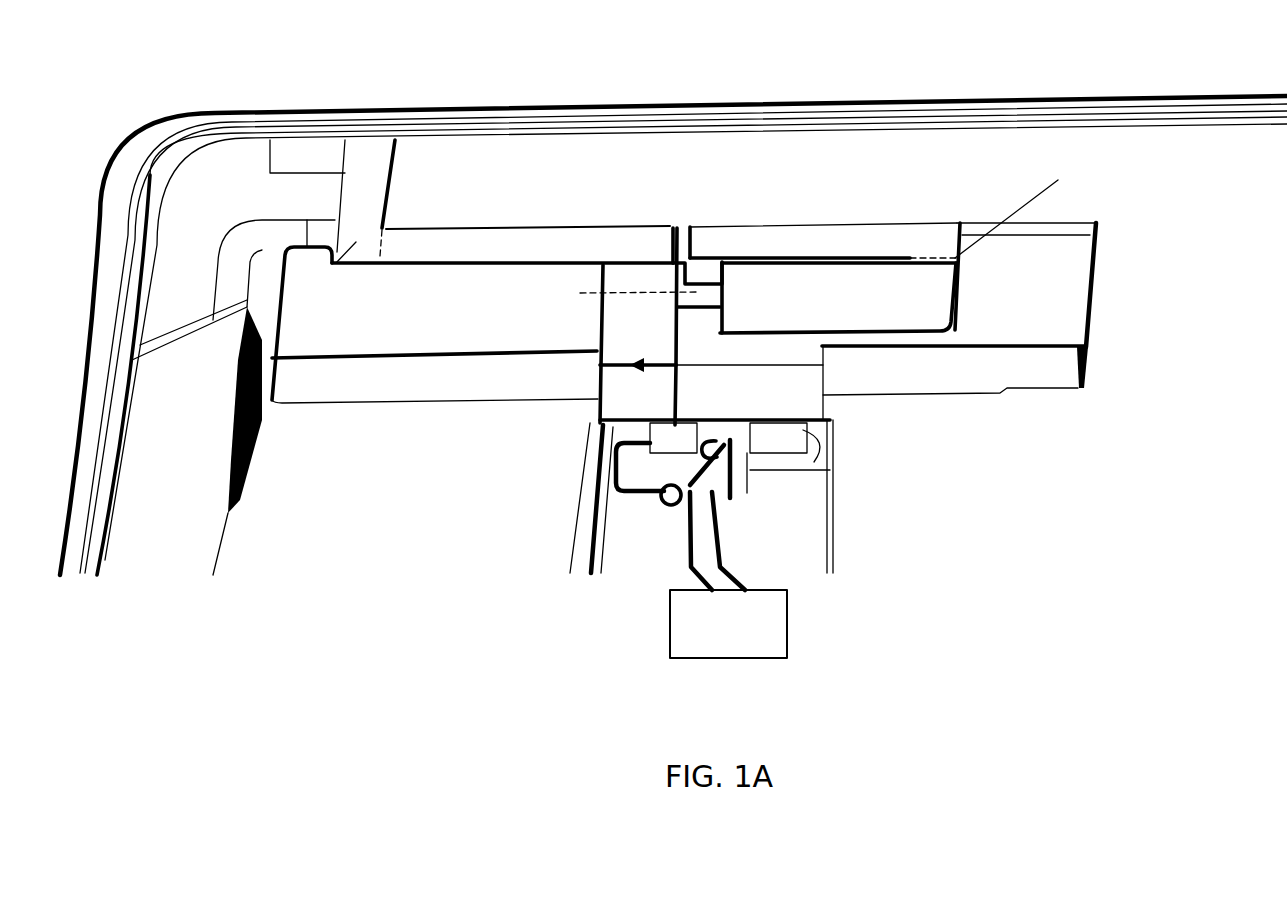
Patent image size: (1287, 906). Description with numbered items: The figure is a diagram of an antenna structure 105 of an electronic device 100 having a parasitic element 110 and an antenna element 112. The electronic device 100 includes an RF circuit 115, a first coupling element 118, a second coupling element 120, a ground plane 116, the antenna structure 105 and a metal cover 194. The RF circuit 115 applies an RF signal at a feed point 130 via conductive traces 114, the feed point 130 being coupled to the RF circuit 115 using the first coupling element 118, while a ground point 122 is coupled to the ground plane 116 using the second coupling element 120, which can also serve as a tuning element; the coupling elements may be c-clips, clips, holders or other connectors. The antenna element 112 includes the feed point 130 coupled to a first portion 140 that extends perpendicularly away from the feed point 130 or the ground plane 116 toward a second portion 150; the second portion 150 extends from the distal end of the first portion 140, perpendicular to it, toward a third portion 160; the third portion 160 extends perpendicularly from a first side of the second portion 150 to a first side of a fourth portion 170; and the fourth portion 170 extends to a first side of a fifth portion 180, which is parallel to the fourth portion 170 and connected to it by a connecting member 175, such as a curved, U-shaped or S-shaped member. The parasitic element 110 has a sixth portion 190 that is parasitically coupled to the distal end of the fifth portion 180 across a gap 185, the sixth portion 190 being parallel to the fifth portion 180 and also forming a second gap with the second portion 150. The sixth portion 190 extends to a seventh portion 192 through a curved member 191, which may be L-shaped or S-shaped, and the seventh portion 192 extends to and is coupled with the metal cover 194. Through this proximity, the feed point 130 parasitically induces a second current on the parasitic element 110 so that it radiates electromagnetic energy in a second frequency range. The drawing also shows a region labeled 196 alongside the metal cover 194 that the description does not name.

The electronic device 100 is at (147, 111).
The metal cover 194 is at (375, 107).
The antenna structure 105 is at (313, 205).
The seventh portion 192 is at (366, 198).
The curved member 191 is at (336, 264).
The sixth portion 190 is at (502, 244).
The parasitic element 110 is at (480, 250).
The third portion 160 is at (580, 293).
The second portion 150 is at (660, 296).
The first portion 140 is at (638, 391).
The gap 185 is at (675, 224).
The fifth portion 180 is at (823, 240).
The fourth portion 170 is at (838, 297).
The conductive housing segment 196 is at (959, 321).
The connecting member 175 is at (1058, 180).
The antenna element 112 is at (937, 277).
The ground point 122 is at (773, 418).
The first coupling element 118 is at (673, 464).
The second coupling element 120 is at (790, 446).
The ground plane 116 is at (790, 496).
The feed point 130 is at (640, 427).
The conductive traces 114 is at (714, 520).
The RF circuit 115 is at (728, 624).